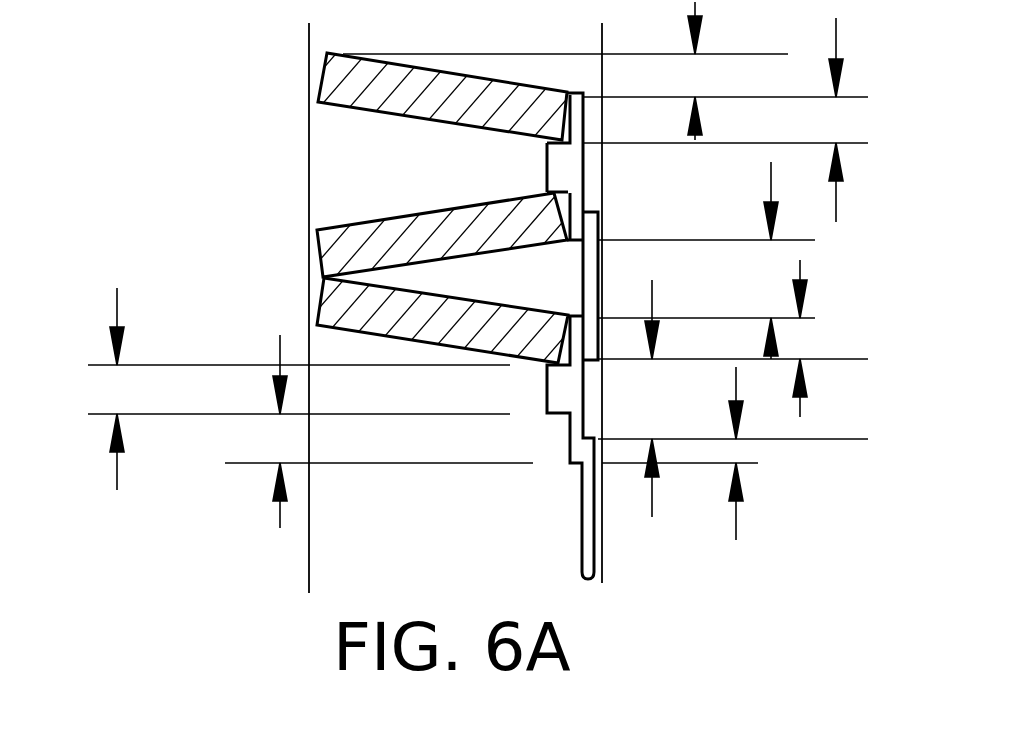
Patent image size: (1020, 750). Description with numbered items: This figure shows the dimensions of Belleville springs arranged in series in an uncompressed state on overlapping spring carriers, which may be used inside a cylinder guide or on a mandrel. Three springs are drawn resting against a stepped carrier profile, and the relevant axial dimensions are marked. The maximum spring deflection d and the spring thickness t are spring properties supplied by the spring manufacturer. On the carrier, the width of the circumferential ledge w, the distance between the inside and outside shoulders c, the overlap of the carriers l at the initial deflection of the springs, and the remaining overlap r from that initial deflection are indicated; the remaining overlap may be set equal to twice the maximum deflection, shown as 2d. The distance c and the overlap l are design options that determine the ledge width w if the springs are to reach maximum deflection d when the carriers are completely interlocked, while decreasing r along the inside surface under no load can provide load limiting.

The maximum spring deflection d is at (605, 70).
The spring thickness t is at (478, 273).
The twice maximum spring deflection 2d is at (706, 260).
The overlap of the carriers l is at (802, 338).
The remaining overlap r is at (733, 398).
The distance between inside and outside shoulders c is at (692, 453).
The width of the circumferential ledge w is at (288, 389).